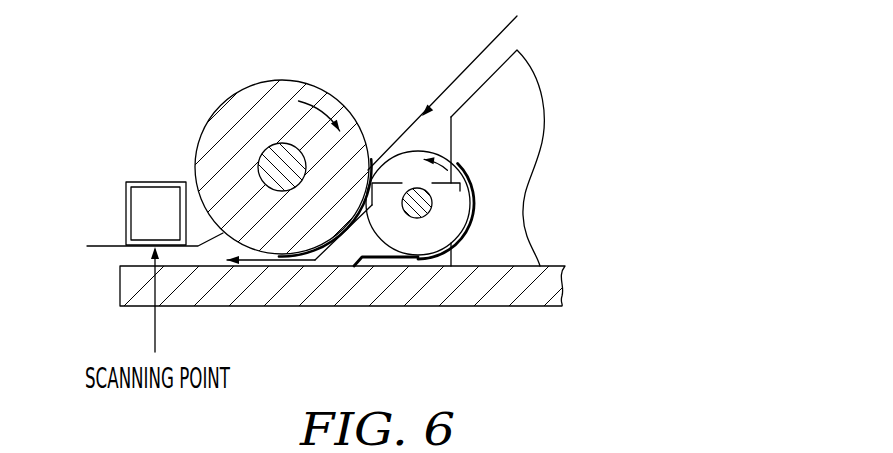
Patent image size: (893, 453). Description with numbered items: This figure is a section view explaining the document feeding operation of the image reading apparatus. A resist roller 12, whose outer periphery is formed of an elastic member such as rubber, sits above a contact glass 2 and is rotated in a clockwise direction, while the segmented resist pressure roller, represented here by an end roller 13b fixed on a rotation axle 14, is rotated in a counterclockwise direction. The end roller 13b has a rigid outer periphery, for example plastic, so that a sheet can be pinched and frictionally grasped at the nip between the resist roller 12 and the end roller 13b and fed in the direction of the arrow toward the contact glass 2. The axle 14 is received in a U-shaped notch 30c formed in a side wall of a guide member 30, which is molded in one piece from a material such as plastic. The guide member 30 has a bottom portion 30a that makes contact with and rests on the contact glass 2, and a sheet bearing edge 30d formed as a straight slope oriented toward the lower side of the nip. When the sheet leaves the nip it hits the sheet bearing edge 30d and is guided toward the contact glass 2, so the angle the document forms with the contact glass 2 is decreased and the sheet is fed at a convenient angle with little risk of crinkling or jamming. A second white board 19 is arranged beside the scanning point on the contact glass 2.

The contact glass 2 is at (518, 295).
The resist roller 12 is at (263, 81).
The end roller 13b is at (450, 177).
The rotation axle 14 is at (425, 200).
The second white board 19 is at (97, 240).
The guide member 30 is at (454, 218).
The bottom portion 30a is at (362, 266).
The U-shaped notch 30c is at (402, 190).
The sheet bearing edge 30d is at (333, 253).